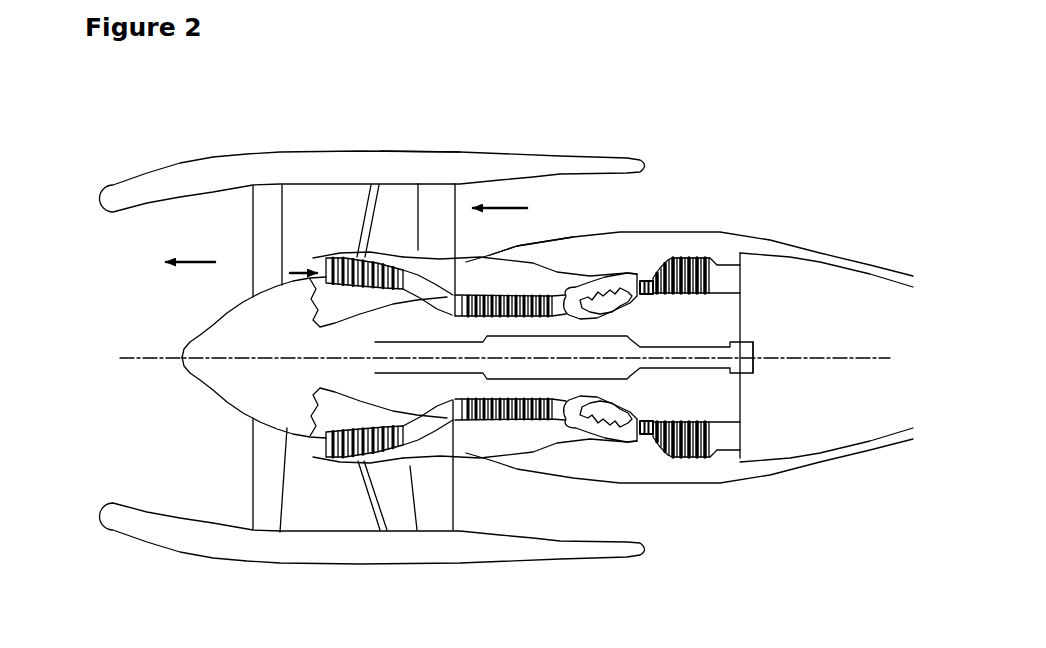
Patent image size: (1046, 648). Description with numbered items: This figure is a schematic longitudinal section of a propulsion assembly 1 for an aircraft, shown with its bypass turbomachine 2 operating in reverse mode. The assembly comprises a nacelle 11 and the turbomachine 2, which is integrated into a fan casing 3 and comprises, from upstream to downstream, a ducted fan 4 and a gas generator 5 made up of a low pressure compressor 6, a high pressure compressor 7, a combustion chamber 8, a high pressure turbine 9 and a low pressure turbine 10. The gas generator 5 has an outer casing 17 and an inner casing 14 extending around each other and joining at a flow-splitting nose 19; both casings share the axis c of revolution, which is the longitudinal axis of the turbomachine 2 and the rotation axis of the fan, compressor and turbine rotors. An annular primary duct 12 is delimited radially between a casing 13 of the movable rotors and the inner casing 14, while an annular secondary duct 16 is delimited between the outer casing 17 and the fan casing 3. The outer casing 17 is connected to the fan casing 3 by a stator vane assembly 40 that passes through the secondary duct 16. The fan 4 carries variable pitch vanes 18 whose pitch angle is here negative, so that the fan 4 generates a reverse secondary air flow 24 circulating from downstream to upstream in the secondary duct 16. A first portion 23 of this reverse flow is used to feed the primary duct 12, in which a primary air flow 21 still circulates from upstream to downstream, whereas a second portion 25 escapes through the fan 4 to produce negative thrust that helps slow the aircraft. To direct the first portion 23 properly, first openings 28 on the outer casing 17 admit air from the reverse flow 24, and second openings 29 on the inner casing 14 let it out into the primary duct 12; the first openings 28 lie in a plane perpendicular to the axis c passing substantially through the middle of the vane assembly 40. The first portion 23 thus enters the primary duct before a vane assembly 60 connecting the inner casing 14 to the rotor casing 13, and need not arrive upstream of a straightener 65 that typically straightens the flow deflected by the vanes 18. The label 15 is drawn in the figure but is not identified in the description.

The propulsion assembly 1 is at (161, 141).
The bypass turbomachine 2 is at (167, 318).
The fan casing 3 is at (533, 168).
The ducted fan 4 is at (243, 433).
The gas generator 5 is at (687, 224).
The low pressure compressor 6 is at (387, 452).
The high pressure compressor 7 is at (514, 426).
The combustion chamber 8 is at (596, 439).
The high pressure turbine 9 is at (647, 450).
The low pressure turbine 10 is at (711, 464).
The nacelle 11 is at (412, 158).
The primary duct 12 is at (322, 442).
The casing of the movable rotors 13 is at (368, 257).
The inner casing 14 is at (413, 255).
The core cowl leading portion 15 is at (518, 243).
The secondary duct 16 is at (620, 208).
The outer casing 17 is at (398, 266).
The variable pitch vanes 18 is at (262, 252).
The nose 19 is at (313, 458).
The primary air flow 21 is at (300, 276).
The first portion of the reverse secondary flow 23 is at (390, 256).
The reverse secondary air flow 24 is at (500, 207).
The second portion of the reverse secondary flow 25 is at (200, 263).
The first openings 28 is at (361, 256).
The second openings 29 is at (366, 257).
The stator vane assembly 40 is at (361, 205).
The vane assembly 60 is at (367, 258).
The straightener 65 is at (345, 258).
The axis of revolution c is at (147, 362).